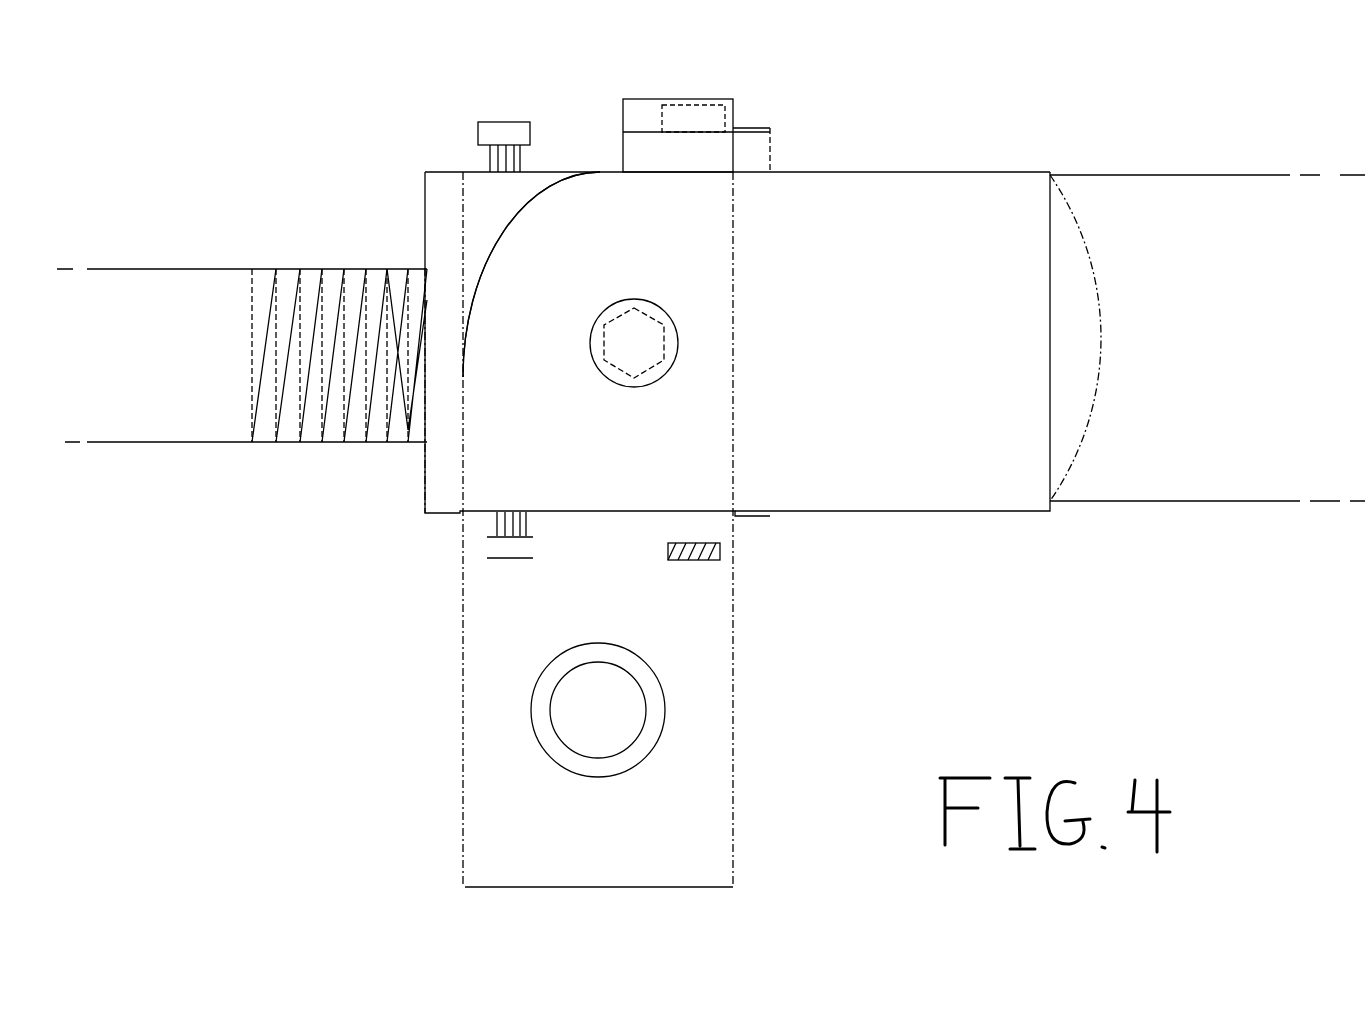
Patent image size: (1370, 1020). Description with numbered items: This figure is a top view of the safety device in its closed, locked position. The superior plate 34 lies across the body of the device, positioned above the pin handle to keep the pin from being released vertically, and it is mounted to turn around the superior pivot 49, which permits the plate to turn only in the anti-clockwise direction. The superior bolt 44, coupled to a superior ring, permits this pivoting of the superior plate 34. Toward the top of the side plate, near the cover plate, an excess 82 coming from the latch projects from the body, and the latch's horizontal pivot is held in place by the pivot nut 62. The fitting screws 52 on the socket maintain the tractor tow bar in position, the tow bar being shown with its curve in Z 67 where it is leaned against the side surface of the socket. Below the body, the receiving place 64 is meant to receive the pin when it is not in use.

The superior plate 34 is at (948, 483).
The superior bolt 44 is at (648, 325).
The superior pivot 49 is at (633, 342).
The excess 82 is at (652, 152).
The curve in Z 67 is at (332, 437).
The fitting screws 52 is at (498, 549).
The pivot nut 62 is at (710, 532).
The receiving place 64 is at (655, 700).